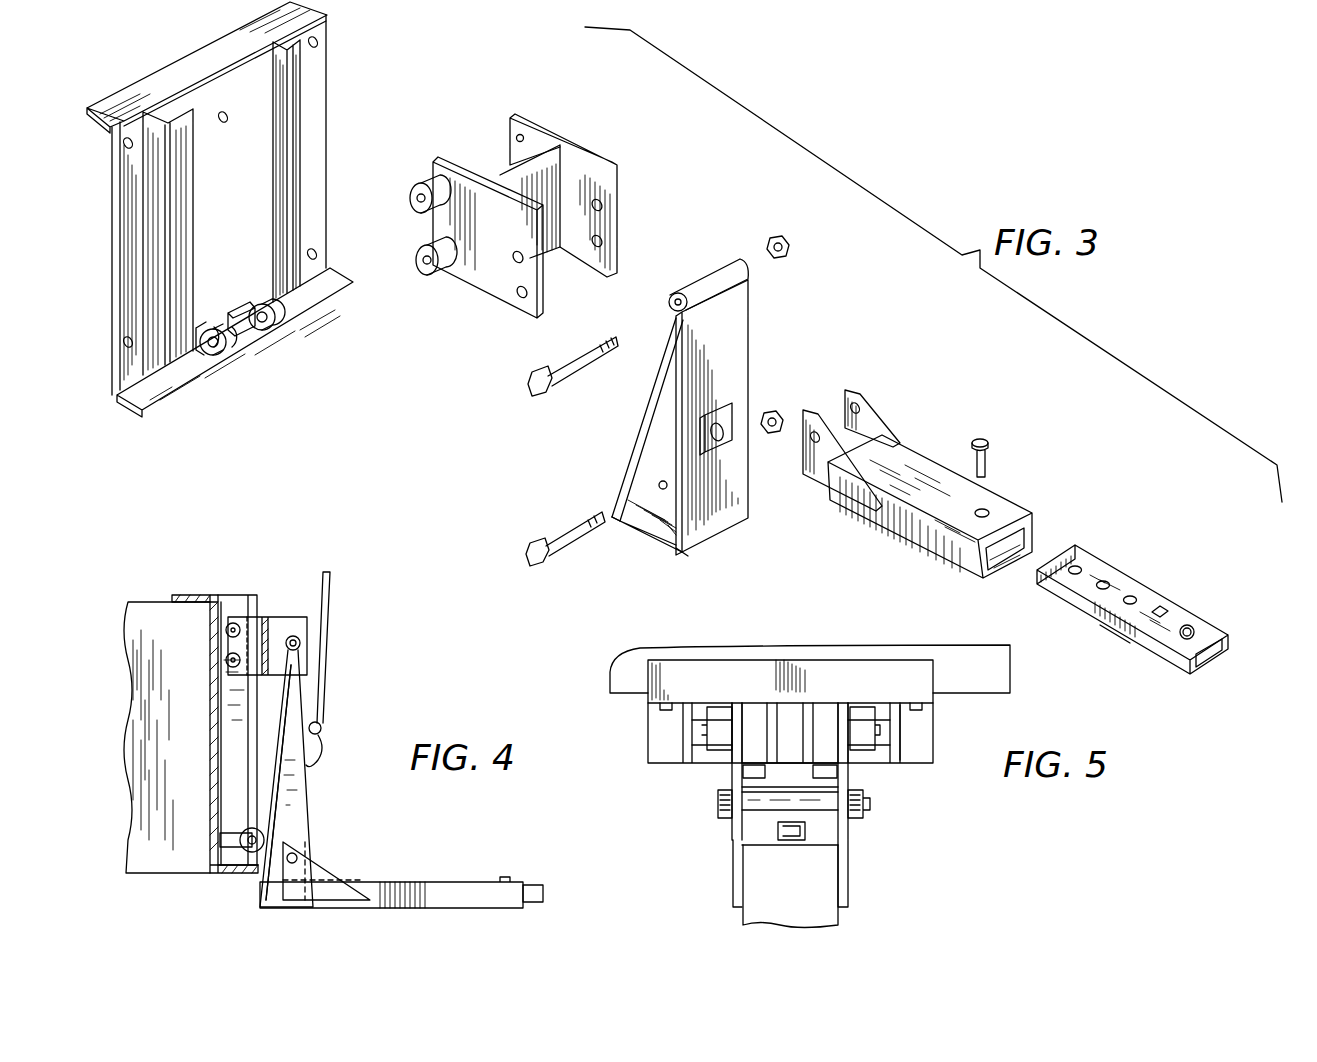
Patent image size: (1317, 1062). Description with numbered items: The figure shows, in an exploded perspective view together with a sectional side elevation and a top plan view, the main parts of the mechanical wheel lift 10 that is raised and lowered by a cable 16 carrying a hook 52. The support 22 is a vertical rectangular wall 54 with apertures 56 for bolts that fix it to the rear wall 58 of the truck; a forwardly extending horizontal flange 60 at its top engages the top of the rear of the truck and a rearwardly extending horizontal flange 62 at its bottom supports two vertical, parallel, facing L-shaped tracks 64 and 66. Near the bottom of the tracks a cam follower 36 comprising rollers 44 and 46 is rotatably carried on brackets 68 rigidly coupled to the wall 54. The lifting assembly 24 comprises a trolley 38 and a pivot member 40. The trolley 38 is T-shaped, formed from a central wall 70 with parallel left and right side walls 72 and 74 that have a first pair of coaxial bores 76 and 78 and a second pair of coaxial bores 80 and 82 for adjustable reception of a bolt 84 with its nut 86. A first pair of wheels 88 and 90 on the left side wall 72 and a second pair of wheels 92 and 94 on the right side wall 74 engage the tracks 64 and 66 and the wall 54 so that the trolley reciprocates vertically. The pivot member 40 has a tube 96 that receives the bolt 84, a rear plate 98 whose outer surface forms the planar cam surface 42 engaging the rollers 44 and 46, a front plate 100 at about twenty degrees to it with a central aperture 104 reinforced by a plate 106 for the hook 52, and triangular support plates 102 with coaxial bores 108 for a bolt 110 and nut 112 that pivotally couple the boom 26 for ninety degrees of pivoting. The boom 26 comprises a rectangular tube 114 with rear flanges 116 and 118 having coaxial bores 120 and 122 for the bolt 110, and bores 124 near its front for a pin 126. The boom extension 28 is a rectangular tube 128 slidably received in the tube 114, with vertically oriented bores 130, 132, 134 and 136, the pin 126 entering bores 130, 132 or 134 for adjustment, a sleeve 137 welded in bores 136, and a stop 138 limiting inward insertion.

In FIG. 4, the mechanical wheel lift 10 is at (355, 732).
In FIG. 5, the mechanical wheel lift 10 is at (832, 773).
In FIG. 4, the cable 16 is at (331, 583).
In FIG. 3, the support 22 is at (213, 218).
In FIG. 4, the support 22 is at (183, 590).
In FIG. 5, the support 22 is at (935, 694).
In FIG. 4, the lifting assembly 24 is at (312, 746).
In FIG. 3, the boom 26 is at (918, 462).
In FIG. 4, the boom 26 is at (386, 910).
In FIG. 5, the boom 26 is at (842, 917).
In FIG. 3, the boom extension 28 is at (1172, 604).
In FIG. 4, the boom extension 28 is at (535, 910).
In FIG. 3, the cam follower 36 is at (259, 319).
In FIG. 3, the trolley 38 is at (518, 210).
In FIG. 4, the trolley 38 is at (228, 619).
In FIG. 5, the trolley 38 is at (852, 832).
In FIG. 3, the pivot member 40 is at (697, 407).
In FIG. 4, the pivot member 40 is at (318, 792).
In FIG. 5, the pivot member 40 is at (755, 820).
In FIG. 3, the cam surface 42 is at (628, 465).
In FIG. 4, the cam surface 42 is at (262, 900).
In FIG. 5, the cam surface 42 is at (745, 790).
In FIG. 3, the cam follower roller 44 is at (218, 358).
In FIG. 5, the cam follower roller 44 is at (745, 770).
In FIG. 3, the cam follower roller 46 is at (268, 330).
In FIG. 4, the cam follower roller 46 is at (245, 828).
In FIG. 5, the cam follower roller 46 is at (828, 780).
In FIG. 4, the hook 52 is at (325, 757).
In FIG. 3, the vertical rectangular wall 54 is at (128, 206).
In FIG. 3, the apertures 56 is at (318, 43).
In FIG. 4, the rear wall of the truck 58 is at (218, 725).
In FIG. 5, the rear wall of the truck 58 is at (992, 697).
In FIG. 3, the horizontal flange 60 is at (112, 104).
In FIG. 3, the horizontal flange 62 is at (158, 400).
In FIG. 4, the horizontal flange 62 is at (220, 878).
In FIG. 3, the track 64 is at (183, 197).
In FIG. 5, the track 64 is at (665, 735).
In FIG. 3, the track 66 is at (290, 140).
In FIG. 4, the track 66 is at (252, 595).
In FIG. 5, the track 66 is at (905, 755).
In FIG. 3, the brackets 68 is at (208, 295).
In FIG. 4, the brackets 68 is at (220, 842).
In FIG. 3, the central wall 70 is at (500, 165).
In FIG. 3, the left side wall 72 is at (482, 270).
In FIG. 3, the right side wall 74 is at (548, 125).
In FIG. 3, the bore 76 is at (516, 250).
In FIG. 3, the bore 78 is at (602, 205).
In FIG. 3, the bore 80 is at (518, 296).
In FIG. 3, the bore 82 is at (602, 241).
In FIG. 3, the bolt 84 is at (580, 368).
In FIG. 5, the bolt 84 is at (718, 815).
In FIG. 3, the nut 86 is at (792, 246).
In FIG. 3, the wheel 88 is at (410, 203).
In FIG. 5, the wheel 88 is at (720, 705).
In FIG. 3, the wheel 90 is at (416, 258).
In FIG. 4, the wheel 92 is at (222, 600).
In FIG. 5, the wheel 92 is at (862, 705).
In FIG. 4, the wheel 94 is at (222, 640).
In FIG. 3, the tube 96 is at (712, 272).
In FIG. 3, the rear plate 98 is at (655, 390).
In FIG. 3, the front plate 100 is at (740, 518).
In FIG. 3, the triangular support plate 102 is at (655, 528).
In FIG. 3, the aperture 104 is at (718, 440).
In FIG. 3, the plate 106 is at (714, 412).
In FIG. 3, the bores 108 is at (684, 552).
In FIG. 3, the bolt 110 is at (572, 545).
In FIG. 4, the bolt 110 is at (298, 852).
In FIG. 3, the nut 112 is at (773, 410).
In FIG. 3, the tube 114 is at (895, 528).
In FIG. 3, the flange 116 is at (822, 468).
In FIG. 4, the flange 116 is at (330, 860).
In FIG. 3, the flange 118 is at (875, 402).
In FIG. 3, the bore 120 is at (810, 440).
In FIG. 3, the bore 122 is at (858, 400).
In FIG. 3, the bores 124 is at (990, 508).
In FIG. 3, the pin 126 is at (990, 450).
In FIG. 3, the tube 128 is at (1195, 612).
In FIG. 3, the bores 130 is at (1082, 568).
In FIG. 3, the bores 132 is at (1108, 582).
In FIG. 3, the bores 134 is at (1137, 598).
In FIG. 3, the bores 136 is at (1172, 645).
In FIG. 3, the sleeve 137 is at (1170, 612).
In FIG. 3, the stop 138 is at (1115, 635).